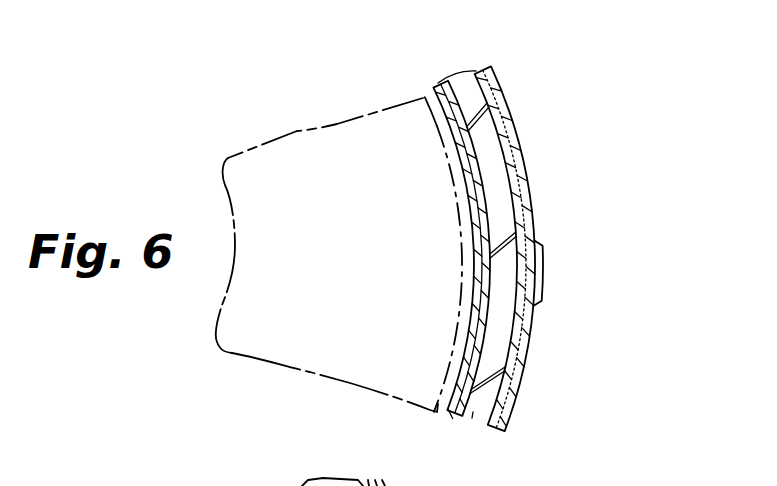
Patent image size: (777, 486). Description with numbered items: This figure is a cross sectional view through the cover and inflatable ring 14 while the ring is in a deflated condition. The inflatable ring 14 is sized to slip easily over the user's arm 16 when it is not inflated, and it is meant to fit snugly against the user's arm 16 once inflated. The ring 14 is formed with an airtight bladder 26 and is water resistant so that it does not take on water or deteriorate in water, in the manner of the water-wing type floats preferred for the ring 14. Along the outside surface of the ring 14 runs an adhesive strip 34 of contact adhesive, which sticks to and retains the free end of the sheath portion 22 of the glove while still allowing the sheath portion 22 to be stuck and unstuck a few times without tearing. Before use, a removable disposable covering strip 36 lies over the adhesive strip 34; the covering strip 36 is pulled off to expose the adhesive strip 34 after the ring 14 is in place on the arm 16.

The inflatable ring 14 is at (472, 77).
The user's arm 16 is at (303, 147).
The sheath portion 22 is at (436, 84).
The airtight bladder 26 is at (473, 413).
The adhesive strip 34 is at (477, 70).
The covering strip 36 is at (543, 287).